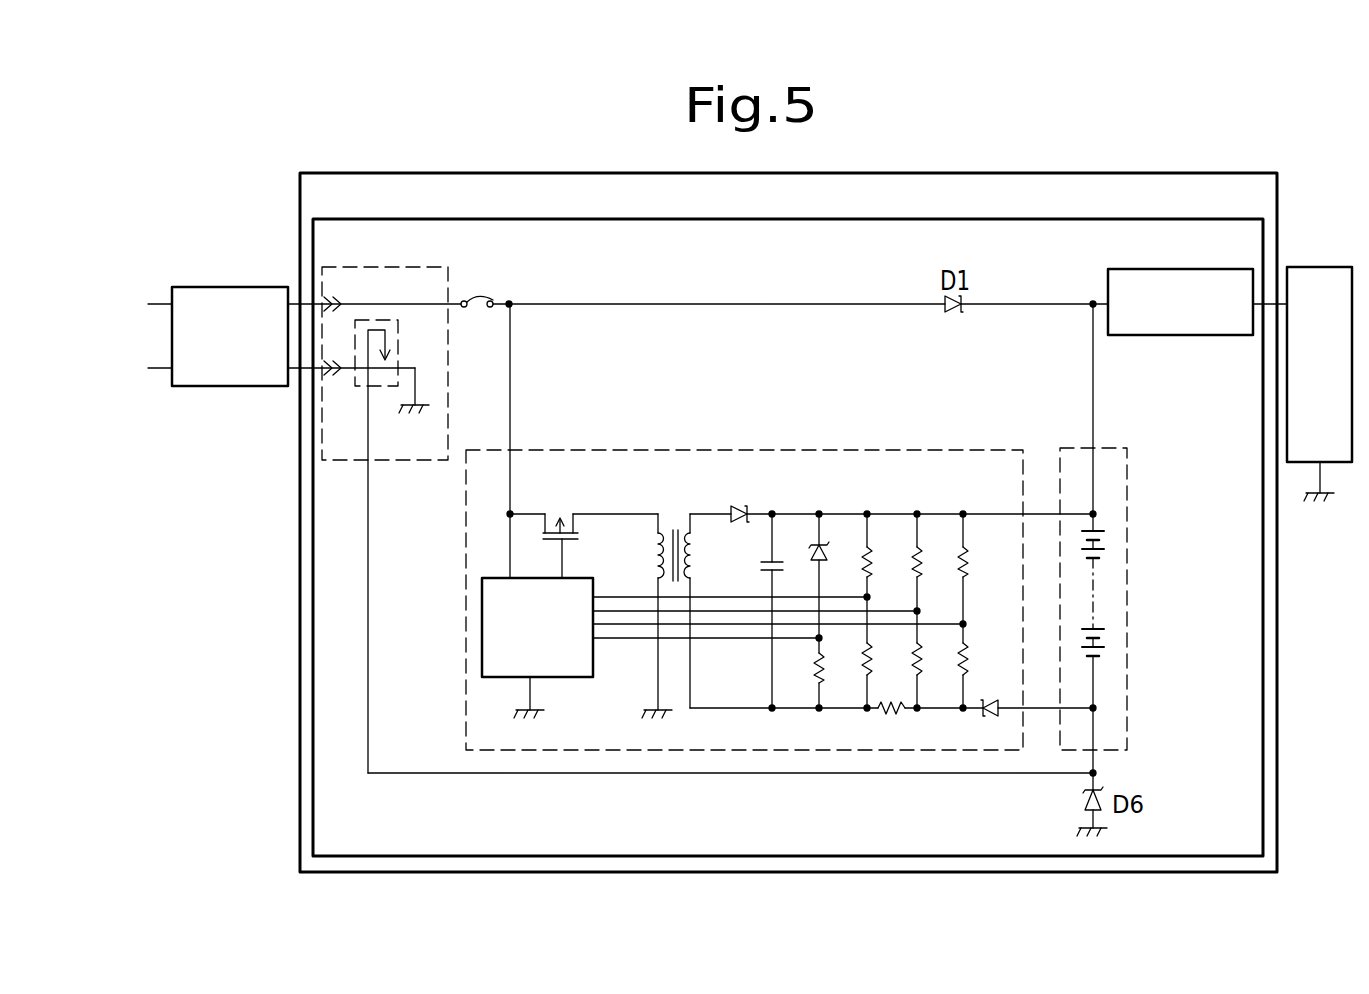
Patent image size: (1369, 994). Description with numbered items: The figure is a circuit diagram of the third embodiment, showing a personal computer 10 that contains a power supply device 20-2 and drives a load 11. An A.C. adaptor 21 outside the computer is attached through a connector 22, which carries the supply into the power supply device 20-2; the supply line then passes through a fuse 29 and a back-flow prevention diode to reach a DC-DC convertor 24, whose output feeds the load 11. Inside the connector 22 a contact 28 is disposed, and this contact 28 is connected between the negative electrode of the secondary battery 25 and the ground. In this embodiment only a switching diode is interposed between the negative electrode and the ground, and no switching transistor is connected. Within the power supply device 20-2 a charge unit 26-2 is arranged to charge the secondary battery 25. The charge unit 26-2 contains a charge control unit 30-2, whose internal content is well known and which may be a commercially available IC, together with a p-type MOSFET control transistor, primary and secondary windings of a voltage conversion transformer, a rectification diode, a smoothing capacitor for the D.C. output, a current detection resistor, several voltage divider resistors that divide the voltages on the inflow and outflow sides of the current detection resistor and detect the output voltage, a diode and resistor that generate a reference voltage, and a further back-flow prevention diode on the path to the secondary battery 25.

The personal computer 10 is at (1032, 173).
The power supply device 20-2 is at (1017, 219).
The A.C. adaptor 21 is at (222, 287).
The connector 22 is at (445, 267).
The contact 28 is at (352, 380).
The fuse 29 is at (495, 300).
The DC-DC convertor 24 is at (1158, 268).
The load 11 is at (1320, 267).
The secondary battery 25 is at (1103, 448).
The charge unit 26-2 is at (600, 450).
The charge control unit 30-2 is at (575, 677).